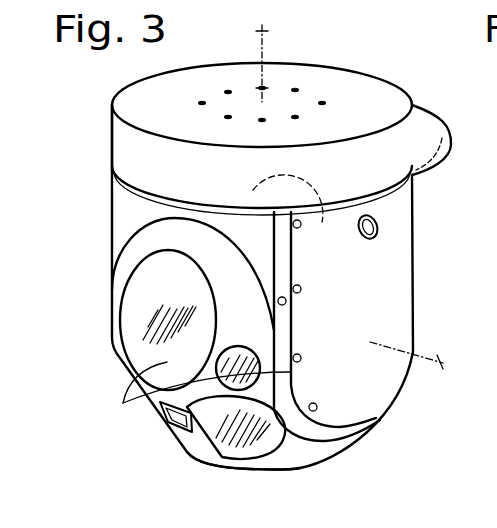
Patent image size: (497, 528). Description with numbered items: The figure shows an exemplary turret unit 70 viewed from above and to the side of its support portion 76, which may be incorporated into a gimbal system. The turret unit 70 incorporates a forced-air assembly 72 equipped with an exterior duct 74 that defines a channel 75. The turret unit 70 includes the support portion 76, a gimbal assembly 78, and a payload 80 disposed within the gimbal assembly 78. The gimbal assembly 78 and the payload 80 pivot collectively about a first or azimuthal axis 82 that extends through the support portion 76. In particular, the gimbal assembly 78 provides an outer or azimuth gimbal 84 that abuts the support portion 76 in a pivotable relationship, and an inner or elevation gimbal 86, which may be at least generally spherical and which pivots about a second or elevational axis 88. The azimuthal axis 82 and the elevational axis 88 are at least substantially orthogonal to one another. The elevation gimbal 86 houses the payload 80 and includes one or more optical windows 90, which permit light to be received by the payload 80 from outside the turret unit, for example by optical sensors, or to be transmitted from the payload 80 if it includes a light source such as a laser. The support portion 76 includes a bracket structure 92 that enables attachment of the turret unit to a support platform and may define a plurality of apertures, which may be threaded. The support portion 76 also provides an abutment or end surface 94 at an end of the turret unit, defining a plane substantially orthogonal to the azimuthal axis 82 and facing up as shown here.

The turret unit 70 is at (84, 103).
The forced-air assembly 72 is at (433, 180).
The exterior duct 74 is at (130, 146).
The channel 75 is at (294, 216).
The support portion 76 is at (94, 155).
The gimbal assembly 78 is at (94, 240).
The payload 80 is at (172, 338).
The azimuthal axis 82 is at (265, 33).
The azimuth gimbal 84 is at (413, 257).
The elevation gimbal 86 is at (305, 468).
The elevational axis 88 is at (437, 368).
The optical windows 90 is at (214, 428).
The bracket structure 92 is at (210, 92).
The end surface 94 is at (352, 90).